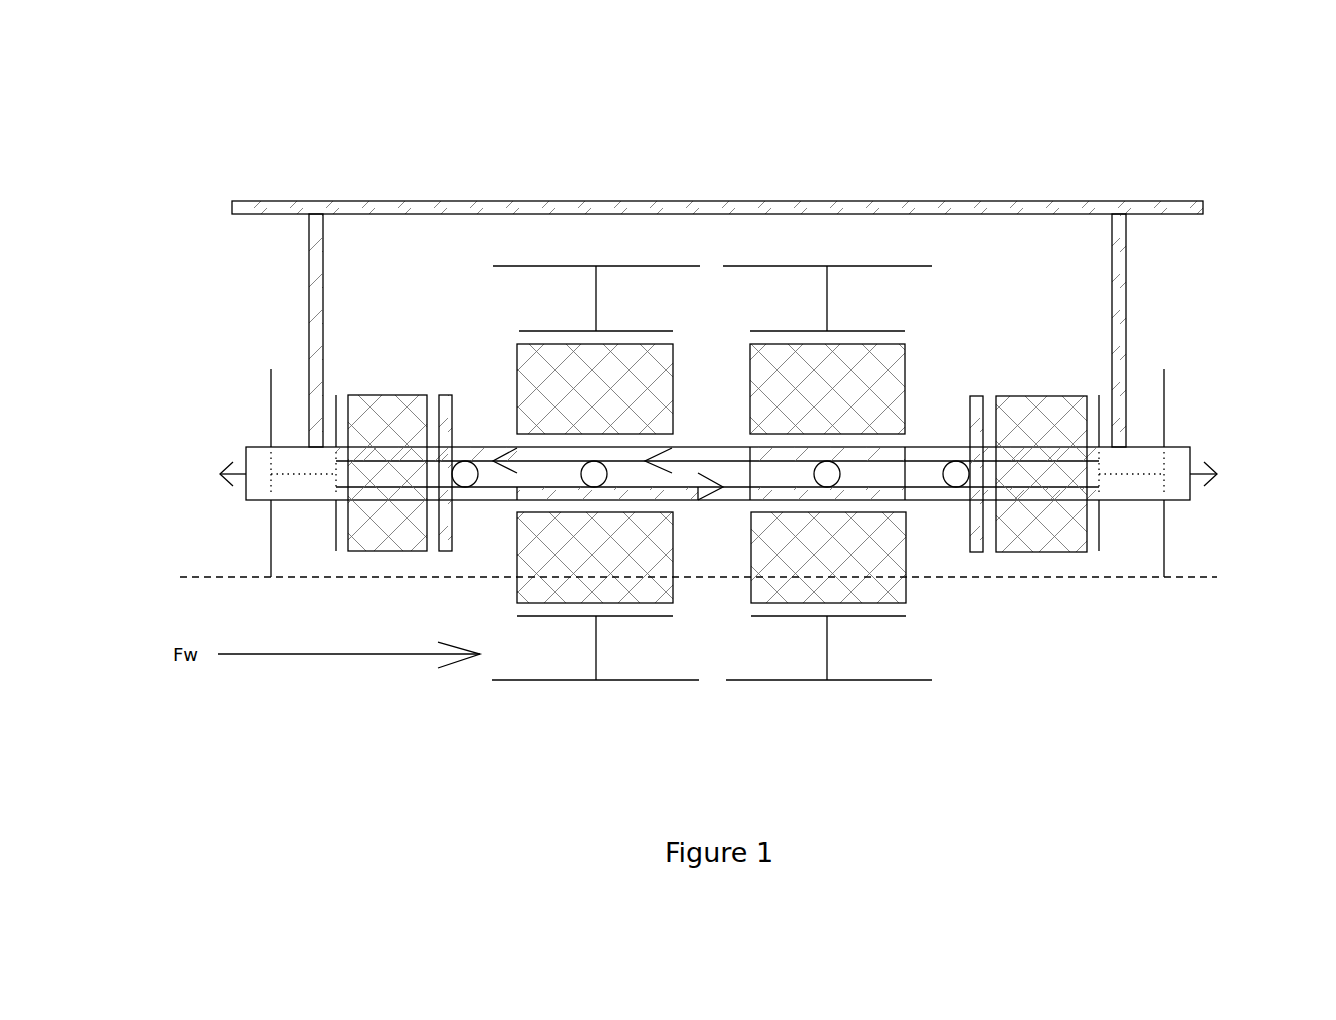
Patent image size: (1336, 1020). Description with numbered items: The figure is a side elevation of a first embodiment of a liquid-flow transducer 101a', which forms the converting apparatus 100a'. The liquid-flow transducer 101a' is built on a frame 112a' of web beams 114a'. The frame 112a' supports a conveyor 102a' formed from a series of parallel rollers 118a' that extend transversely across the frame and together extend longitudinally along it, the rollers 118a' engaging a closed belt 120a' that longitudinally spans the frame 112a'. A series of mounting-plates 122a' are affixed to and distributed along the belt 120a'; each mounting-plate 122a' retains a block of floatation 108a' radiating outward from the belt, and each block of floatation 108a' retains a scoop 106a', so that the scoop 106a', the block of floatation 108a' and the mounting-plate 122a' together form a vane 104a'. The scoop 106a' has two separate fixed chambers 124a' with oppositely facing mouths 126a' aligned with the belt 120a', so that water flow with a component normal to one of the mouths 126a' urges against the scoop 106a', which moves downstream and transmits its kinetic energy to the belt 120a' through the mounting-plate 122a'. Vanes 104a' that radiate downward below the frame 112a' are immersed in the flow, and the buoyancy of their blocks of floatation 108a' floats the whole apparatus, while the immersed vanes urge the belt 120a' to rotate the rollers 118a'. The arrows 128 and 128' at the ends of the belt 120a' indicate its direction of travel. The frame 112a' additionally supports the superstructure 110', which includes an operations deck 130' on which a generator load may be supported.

The converting apparatus 100a' is at (724, 372).
The liquid-flow transducer 101a' is at (1057, 740).
The conveyor 102a' is at (712, 350).
The vane 104a' is at (1122, 635).
The scoop 106a' is at (863, 724).
The block of floatation 108a' is at (890, 593).
The superstructure 110' is at (690, 279).
The frame 112a' is at (219, 433).
The web beams 114a' is at (1209, 461).
The parallel rollers 118a' is at (474, 398).
The closed belt 120a' is at (718, 418).
The mounting-plate 122a' is at (1038, 524).
The fixed chambers 124a' is at (711, 648).
The mouths 126a' is at (545, 697).
The left motion arrow 128 is at (193, 495).
The right motion arrow 128' is at (1244, 502).
The operations deck 130' is at (717, 163).